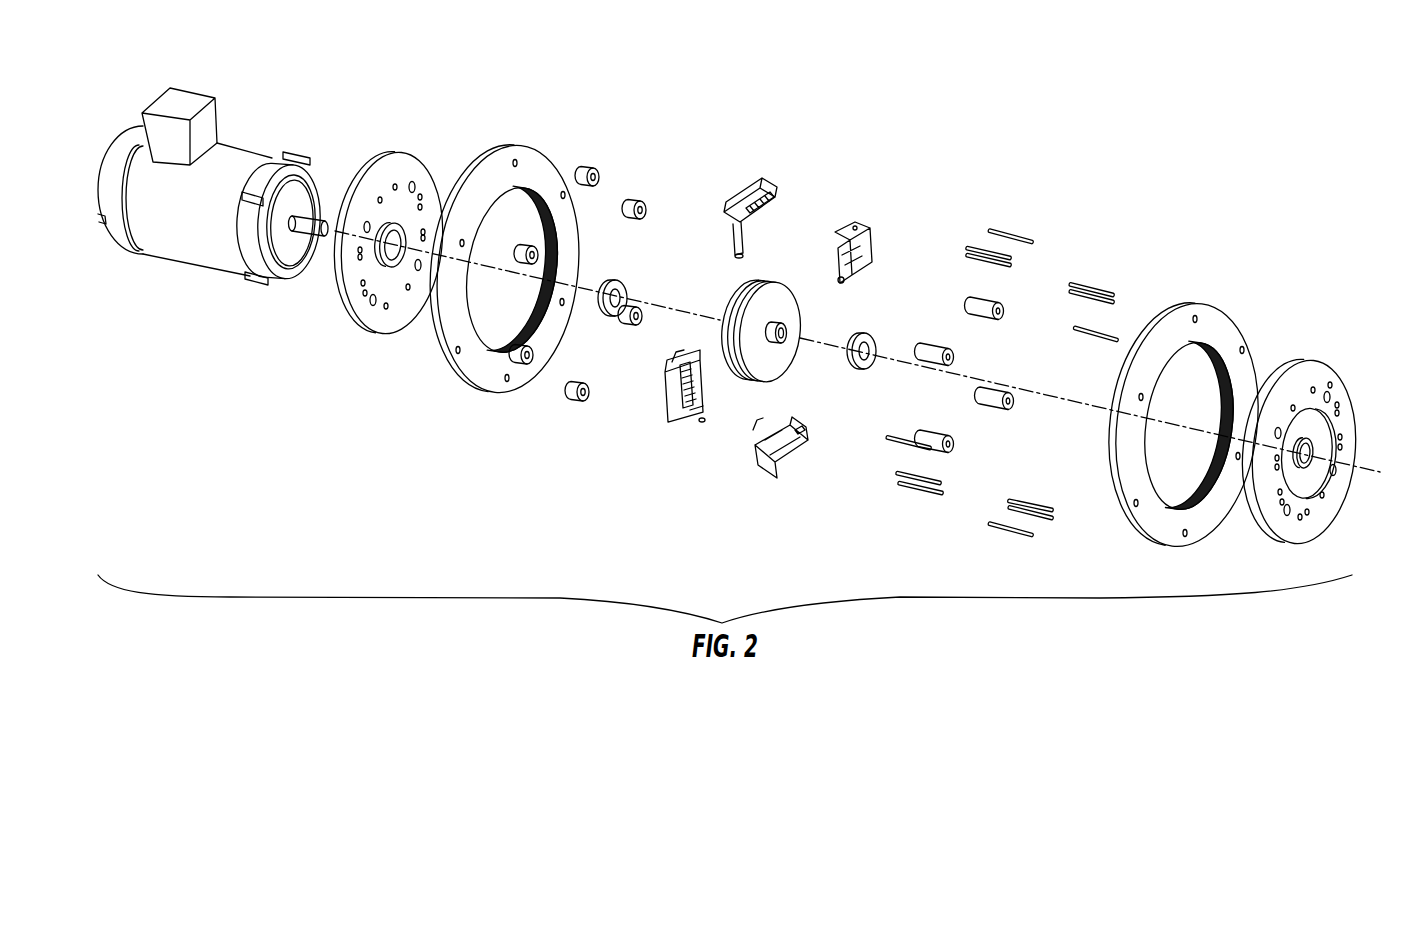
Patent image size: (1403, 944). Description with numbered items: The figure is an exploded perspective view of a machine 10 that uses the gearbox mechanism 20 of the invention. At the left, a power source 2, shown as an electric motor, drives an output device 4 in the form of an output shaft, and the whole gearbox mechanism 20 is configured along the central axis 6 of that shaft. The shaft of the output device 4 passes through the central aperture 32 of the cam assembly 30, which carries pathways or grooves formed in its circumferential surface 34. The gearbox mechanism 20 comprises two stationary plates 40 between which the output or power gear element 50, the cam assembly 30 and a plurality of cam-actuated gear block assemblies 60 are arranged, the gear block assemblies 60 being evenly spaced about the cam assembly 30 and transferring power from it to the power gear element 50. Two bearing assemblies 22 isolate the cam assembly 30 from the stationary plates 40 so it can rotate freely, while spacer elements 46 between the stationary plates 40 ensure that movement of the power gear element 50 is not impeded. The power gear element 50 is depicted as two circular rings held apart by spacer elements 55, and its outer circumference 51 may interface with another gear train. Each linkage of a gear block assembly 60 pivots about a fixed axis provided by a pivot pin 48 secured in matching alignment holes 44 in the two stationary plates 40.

The power source 2 is at (195, 219).
The output device 4 is at (303, 228).
The central axis 6 is at (718, 319).
The machine 10 is at (480, 72).
The gearbox mechanism 20 is at (818, 160).
The bearing assembly 22 is at (610, 313).
The cam assembly 30 is at (768, 364).
The central aperture 32 is at (788, 334).
The circumferential surface 34 is at (745, 312).
The stationary plate 40 is at (407, 153).
The alignment holes 44 is at (400, 183).
The spacer elements 46 is at (1000, 301).
The pivot pin 48 is at (1010, 230).
The power gear element 50 is at (540, 153).
The outer circumference 51 is at (457, 377).
The spacer elements 55 is at (532, 246).
The gear block assembly 60 is at (745, 193).